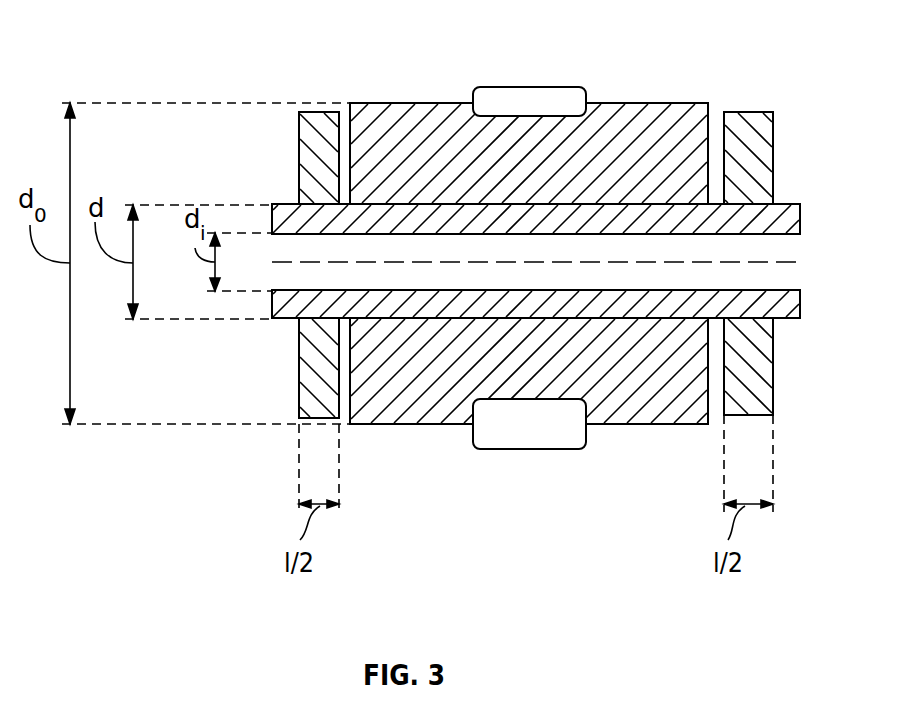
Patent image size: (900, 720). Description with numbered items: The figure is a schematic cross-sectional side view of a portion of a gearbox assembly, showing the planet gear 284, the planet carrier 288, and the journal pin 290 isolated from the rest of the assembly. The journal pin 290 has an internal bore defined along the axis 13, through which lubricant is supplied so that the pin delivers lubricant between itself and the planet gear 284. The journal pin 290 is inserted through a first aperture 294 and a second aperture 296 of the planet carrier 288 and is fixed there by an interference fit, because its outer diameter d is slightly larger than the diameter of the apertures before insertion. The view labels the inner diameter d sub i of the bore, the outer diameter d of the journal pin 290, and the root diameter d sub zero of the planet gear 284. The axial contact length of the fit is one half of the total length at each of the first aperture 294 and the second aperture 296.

The planet gear 284 is at (696, 103).
The planet carrier 288 is at (752, 112).
The journal pin 290 is at (802, 214).
The axis 13 is at (777, 262).
The first aperture 294 is at (272, 196).
The second aperture 296 is at (810, 324).